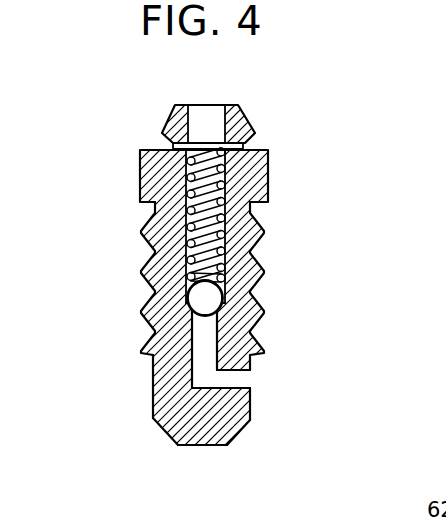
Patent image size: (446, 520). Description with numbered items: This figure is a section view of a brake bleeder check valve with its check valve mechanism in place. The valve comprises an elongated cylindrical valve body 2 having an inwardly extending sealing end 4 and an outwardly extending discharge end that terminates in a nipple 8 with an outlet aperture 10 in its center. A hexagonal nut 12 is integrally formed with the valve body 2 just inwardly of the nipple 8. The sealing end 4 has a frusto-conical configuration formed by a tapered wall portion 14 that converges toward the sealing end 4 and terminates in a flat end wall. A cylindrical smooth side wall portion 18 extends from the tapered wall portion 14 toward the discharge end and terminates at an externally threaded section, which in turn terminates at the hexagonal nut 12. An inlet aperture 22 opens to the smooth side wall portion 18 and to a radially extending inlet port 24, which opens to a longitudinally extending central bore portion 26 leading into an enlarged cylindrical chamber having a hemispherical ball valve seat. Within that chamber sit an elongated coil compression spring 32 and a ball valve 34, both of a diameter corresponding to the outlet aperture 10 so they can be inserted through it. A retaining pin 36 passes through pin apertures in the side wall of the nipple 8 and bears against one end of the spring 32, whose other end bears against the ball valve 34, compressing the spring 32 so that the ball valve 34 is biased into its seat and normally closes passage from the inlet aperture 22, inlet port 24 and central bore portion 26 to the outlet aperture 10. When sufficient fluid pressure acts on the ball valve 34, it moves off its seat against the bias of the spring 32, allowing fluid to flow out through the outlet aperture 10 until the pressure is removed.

The valve body 2 is at (141, 210).
The sealing end 4 is at (208, 446).
The nipple 8 is at (253, 126).
The outlet aperture 10 is at (213, 112).
The hexagonal nut 12 is at (140, 178).
The tapered wall portion 14 is at (165, 432).
The cylindrical smooth side wall portion 18 is at (152, 400).
The inlet aperture 22 is at (252, 375).
The inlet port 24 is at (240, 424).
The central bore portion 26 is at (205, 348).
The coil compression spring 32 is at (231, 198).
The ball valve 34 is at (211, 298).
The retaining pin 36 is at (168, 146).